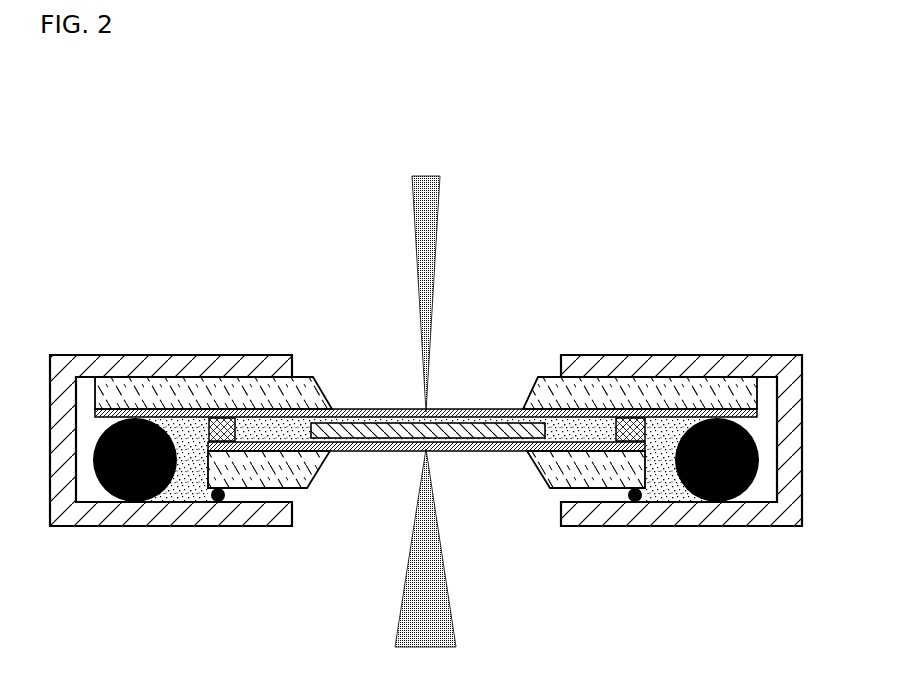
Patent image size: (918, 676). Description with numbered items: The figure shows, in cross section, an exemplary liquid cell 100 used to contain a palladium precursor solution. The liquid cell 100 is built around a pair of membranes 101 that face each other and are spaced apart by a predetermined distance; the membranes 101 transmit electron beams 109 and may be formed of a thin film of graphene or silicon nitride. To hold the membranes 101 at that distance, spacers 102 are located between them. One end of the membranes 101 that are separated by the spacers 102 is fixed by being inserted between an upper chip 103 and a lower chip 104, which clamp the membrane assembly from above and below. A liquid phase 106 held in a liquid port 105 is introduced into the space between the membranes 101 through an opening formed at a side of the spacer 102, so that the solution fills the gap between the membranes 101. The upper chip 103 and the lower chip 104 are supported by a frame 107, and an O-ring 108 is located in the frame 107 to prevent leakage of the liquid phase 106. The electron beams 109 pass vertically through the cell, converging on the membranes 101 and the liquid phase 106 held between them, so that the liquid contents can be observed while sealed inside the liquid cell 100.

The liquid cell 100 is at (224, 126).
The membranes 101 is at (483, 409).
The spacers 102 is at (634, 430).
The upper chip 103 is at (220, 393).
The lower chip 104 is at (255, 472).
The liquid port 105 is at (186, 437).
The liquid phase 106 is at (271, 428).
The frame 107 is at (727, 368).
The O-ring 108 is at (695, 494).
The electron beams 109 is at (433, 218).